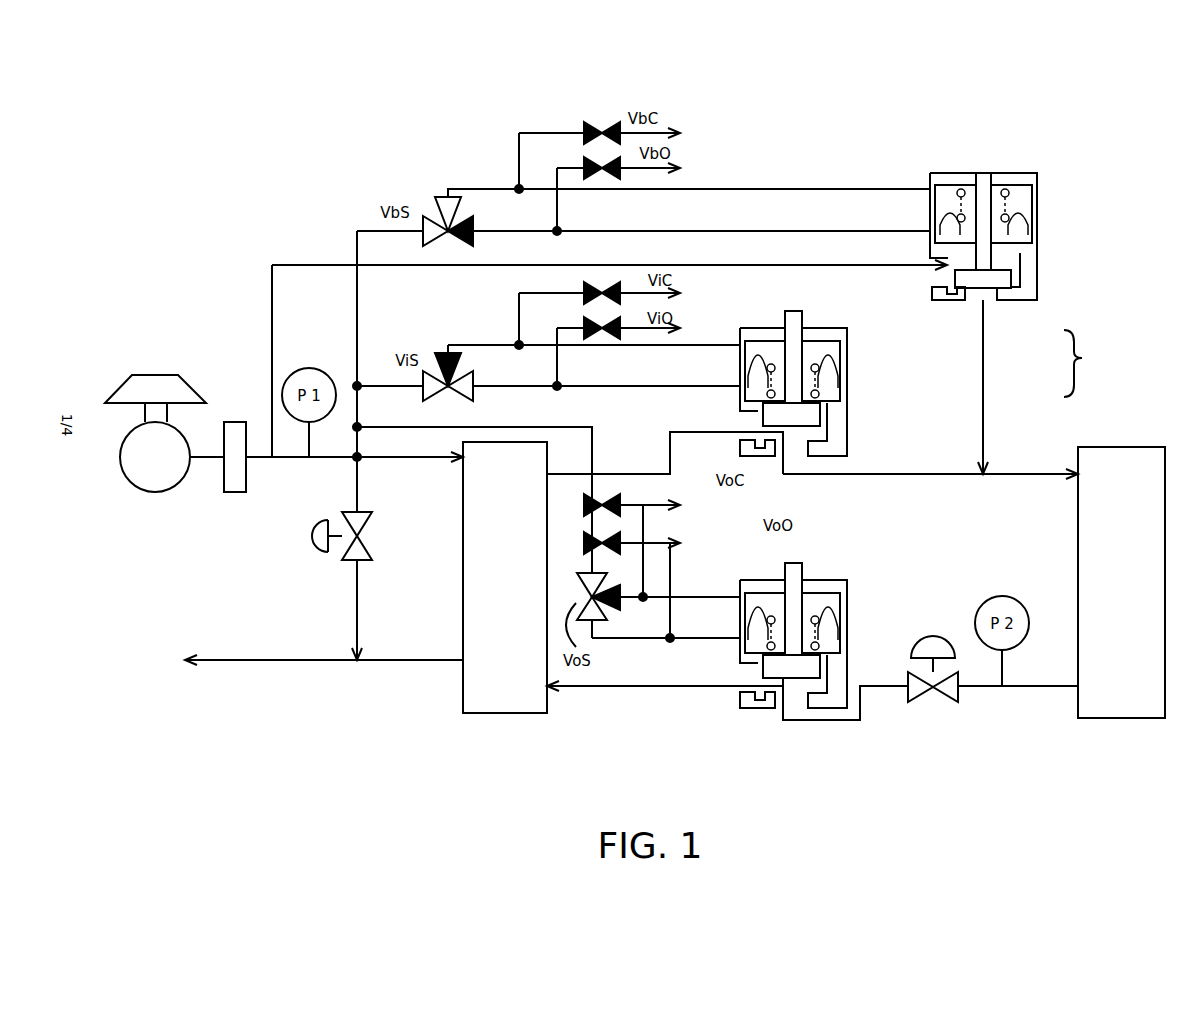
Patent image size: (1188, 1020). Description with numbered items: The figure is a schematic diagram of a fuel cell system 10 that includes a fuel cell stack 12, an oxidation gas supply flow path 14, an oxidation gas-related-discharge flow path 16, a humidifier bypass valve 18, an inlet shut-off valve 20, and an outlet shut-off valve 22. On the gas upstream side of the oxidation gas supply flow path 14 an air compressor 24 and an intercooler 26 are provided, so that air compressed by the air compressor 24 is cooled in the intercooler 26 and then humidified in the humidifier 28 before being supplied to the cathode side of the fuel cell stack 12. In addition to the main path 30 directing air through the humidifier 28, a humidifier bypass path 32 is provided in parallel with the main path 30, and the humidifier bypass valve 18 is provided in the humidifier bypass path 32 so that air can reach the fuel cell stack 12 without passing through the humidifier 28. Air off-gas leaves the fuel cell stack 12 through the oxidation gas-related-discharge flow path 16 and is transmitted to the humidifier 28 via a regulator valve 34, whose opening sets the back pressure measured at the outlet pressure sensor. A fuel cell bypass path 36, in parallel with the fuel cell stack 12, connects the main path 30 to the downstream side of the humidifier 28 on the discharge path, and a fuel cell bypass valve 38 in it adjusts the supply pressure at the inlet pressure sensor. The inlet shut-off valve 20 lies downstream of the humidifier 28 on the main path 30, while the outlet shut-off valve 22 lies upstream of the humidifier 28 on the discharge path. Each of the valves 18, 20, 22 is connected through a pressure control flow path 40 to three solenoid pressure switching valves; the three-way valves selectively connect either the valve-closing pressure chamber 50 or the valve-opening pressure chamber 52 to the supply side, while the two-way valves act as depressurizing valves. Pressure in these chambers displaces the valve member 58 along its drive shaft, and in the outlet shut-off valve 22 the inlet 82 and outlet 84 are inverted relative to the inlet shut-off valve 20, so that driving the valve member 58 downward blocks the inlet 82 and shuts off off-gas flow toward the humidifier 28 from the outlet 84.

The fuel cell system 10 is at (939, 125).
The fuel cell stack 12 is at (1120, 447).
The oxidation gas supply flow path 14 is at (1086, 363).
The oxidation gas-related-discharge flow path 16 is at (618, 686).
The humidifier bypass valve 18 is at (1030, 172).
The inlet shut-off valve 20 is at (847, 358).
The outlet shut-off valve 22 is at (850, 580).
The air compressor 24 is at (130, 487).
The intercooler 26 is at (236, 492).
The humidifier 28 is at (497, 714).
The main path 30 is at (905, 474).
The humidifier bypass path 32 is at (905, 268).
The regulator valve 34 is at (918, 700).
The fuel cell bypass path 36 is at (357, 595).
The fuel cell bypass valve 38 is at (372, 528).
The pressure control flow path 40 is at (772, 231).
The valve-closing pressure chamber 50 is at (1024, 205).
The valve-opening pressure chamber 52 is at (1012, 233).
The valve member 58 is at (986, 178).
The inlet 82 is at (930, 256).
The outlet 84 is at (1000, 292).